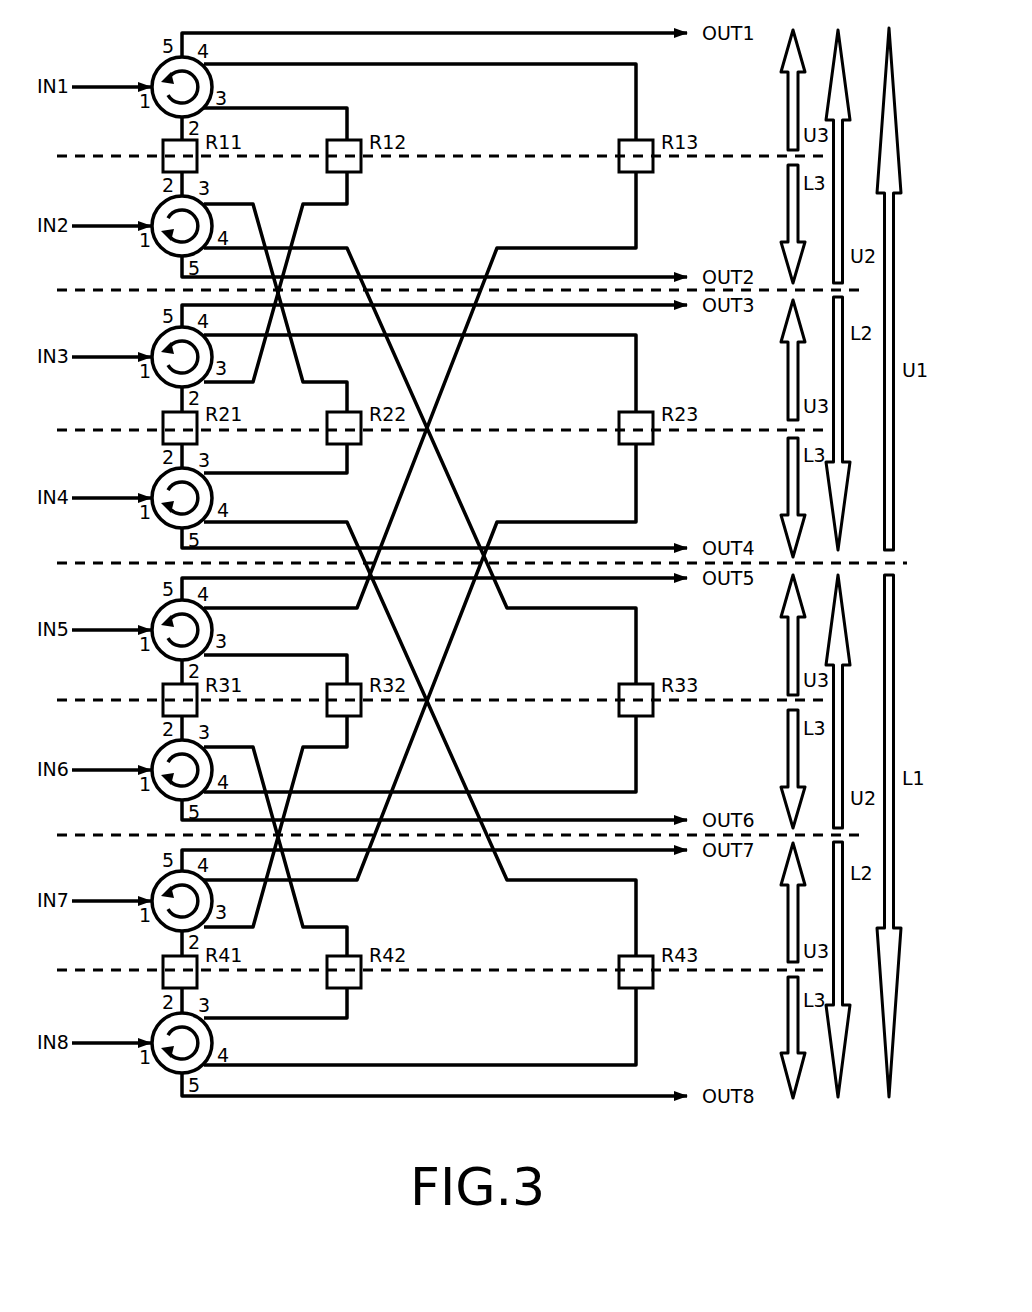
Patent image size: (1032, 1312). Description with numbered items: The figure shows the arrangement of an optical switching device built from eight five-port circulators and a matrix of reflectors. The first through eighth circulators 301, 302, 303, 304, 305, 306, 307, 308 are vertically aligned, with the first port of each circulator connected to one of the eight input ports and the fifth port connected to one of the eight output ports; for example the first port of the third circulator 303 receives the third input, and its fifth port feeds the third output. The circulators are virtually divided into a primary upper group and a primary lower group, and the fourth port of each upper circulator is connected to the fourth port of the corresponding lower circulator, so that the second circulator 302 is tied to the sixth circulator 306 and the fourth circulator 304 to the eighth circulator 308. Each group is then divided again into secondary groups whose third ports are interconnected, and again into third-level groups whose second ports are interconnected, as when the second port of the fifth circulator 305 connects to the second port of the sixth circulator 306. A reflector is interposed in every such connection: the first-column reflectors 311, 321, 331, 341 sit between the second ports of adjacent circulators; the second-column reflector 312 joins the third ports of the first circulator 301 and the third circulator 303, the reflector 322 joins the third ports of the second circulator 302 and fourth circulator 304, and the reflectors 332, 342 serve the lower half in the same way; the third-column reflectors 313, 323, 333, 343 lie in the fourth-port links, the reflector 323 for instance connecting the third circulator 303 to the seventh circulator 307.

The first circulator 301 is at (160, 70).
The second circulator 302 is at (160, 209).
The third circulator 303 is at (160, 340).
The fourth circulator 304 is at (160, 481).
The fifth circulator 305 is at (160, 613).
The sixth circulator 306 is at (160, 753).
The seventh circulator 307 is at (160, 884).
The eighth circulator 308 is at (160, 1026).
The R11 reflector 311 is at (163, 150).
The R12 reflector 312 is at (327, 170).
The R13 reflector 313 is at (619, 170).
The R21 reflector 321 is at (163, 422).
The R22 reflector 322 is at (327, 442).
The R23 reflector 323 is at (619, 442).
The R31 reflector 331 is at (163, 694).
The R32 reflector 332 is at (327, 714).
The R33 reflector 333 is at (619, 714).
The R41 reflector 341 is at (163, 966).
The R42 reflector 342 is at (327, 986).
The R43 reflector 343 is at (619, 986).